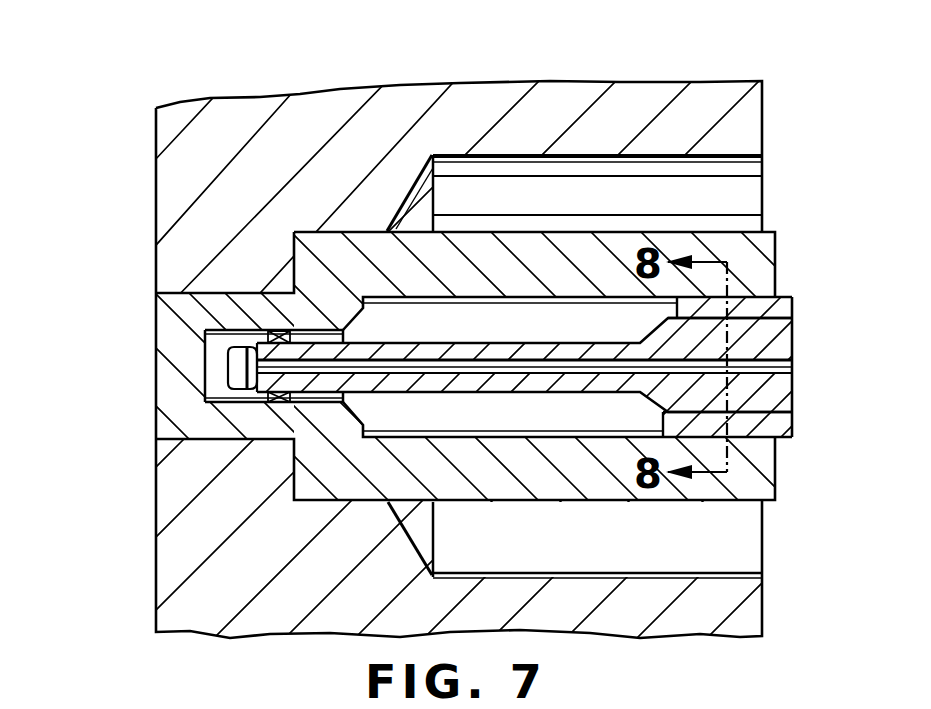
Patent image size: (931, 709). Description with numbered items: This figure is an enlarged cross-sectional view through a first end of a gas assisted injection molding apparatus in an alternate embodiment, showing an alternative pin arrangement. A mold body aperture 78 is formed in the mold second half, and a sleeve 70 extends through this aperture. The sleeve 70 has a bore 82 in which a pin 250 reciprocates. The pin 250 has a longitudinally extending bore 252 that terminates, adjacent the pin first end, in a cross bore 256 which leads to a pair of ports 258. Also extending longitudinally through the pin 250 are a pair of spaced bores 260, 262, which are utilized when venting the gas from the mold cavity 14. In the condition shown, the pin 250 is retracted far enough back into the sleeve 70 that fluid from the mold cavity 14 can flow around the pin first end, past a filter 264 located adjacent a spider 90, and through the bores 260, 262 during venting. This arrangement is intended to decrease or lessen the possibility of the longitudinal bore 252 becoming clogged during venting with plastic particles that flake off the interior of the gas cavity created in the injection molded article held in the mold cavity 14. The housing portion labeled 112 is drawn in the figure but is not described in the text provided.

The mold cavity 14 is at (152, 178).
The housing 112 is at (188, 223).
The mold body aperture 78 is at (612, 168).
The bore 82 is at (459, 264).
The sleeve 70 is at (788, 296).
The spider 90 is at (291, 334).
The filter 264 is at (270, 330).
The ports 258 is at (249, 392).
The cross bore 256 is at (232, 364).
The pin 250 is at (455, 393).
The longitudinally extending bore 252 is at (494, 362).
The spaced bore 260 is at (795, 320).
The spaced bore 262 is at (795, 413).